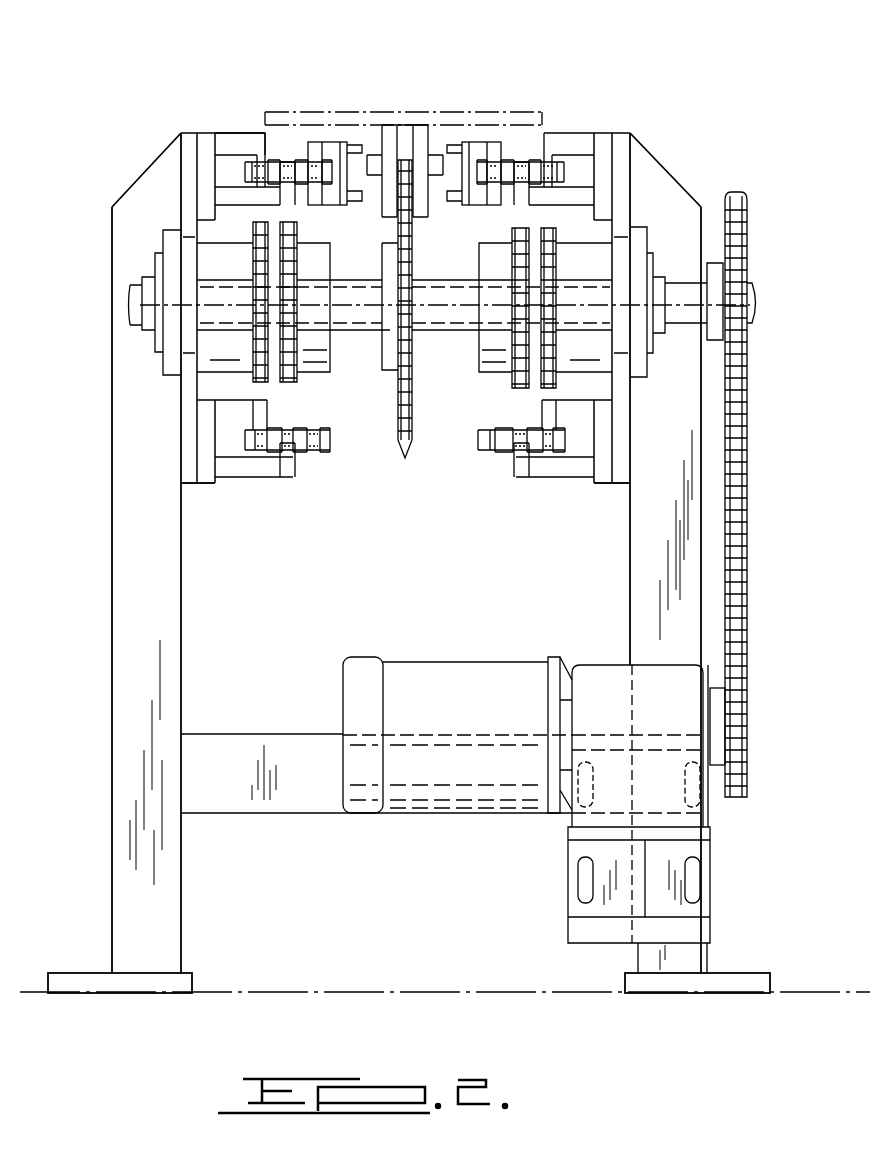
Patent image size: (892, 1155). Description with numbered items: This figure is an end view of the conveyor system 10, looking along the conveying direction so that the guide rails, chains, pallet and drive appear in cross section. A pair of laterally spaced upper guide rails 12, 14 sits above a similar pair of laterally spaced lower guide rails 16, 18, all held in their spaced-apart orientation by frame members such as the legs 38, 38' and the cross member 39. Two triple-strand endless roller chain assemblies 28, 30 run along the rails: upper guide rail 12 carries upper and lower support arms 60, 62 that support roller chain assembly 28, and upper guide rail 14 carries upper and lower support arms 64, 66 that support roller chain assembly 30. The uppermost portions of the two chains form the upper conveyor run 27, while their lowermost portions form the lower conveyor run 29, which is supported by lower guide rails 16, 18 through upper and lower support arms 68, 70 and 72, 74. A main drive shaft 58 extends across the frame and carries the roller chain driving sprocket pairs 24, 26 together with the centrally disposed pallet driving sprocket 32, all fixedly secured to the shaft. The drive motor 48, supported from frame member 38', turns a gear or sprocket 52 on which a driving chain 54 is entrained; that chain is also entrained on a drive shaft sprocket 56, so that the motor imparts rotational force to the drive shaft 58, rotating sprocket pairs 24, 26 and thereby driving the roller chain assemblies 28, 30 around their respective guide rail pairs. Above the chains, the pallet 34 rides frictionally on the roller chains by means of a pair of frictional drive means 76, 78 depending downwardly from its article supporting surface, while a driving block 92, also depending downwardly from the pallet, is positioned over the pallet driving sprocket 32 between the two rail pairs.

The conveyor system 10 is at (100, 80).
The upper guide rail 12 is at (181, 126).
The upper guide rail 14 is at (634, 128).
The lower guide rail 16 is at (240, 486).
The lower guide rail 18 is at (563, 487).
The roller chain driving sprocket pair 24 is at (308, 378).
The roller chain driving sprocket pair 26 is at (508, 398).
The upper conveyor run 27 is at (238, 171).
The roller chain assembly 28 is at (290, 150).
The lower conveyor run 29 is at (334, 446).
The roller chain assembly 30 is at (512, 152).
The pallet driving sprocket 32 is at (405, 458).
The pallet 34 is at (407, 108).
The frame member 38 is at (120, 563).
The frame member 38' is at (669, 563).
The frame member 39 is at (248, 745).
The drive motor 48 is at (535, 836).
The gear or sprocket 52 is at (735, 808).
The driving chain 54 is at (738, 745).
The drive shaft sprocket 56 is at (749, 194).
The main drive shaft 58 is at (680, 282).
The upper support arm 60 is at (258, 152).
The lower support arm 62 is at (288, 203).
The upper support arm 64 is at (550, 152).
The lower support arm 66 is at (522, 203).
The upper support arm 68 is at (260, 414).
The lower support arm 70 is at (287, 470).
The upper support arm 72 is at (550, 414).
The lower support arm 74 is at (522, 470).
The frictional drive means 76 is at (342, 212).
The frictional drive means 78 is at (463, 212).
The driving block 92 is at (433, 215).